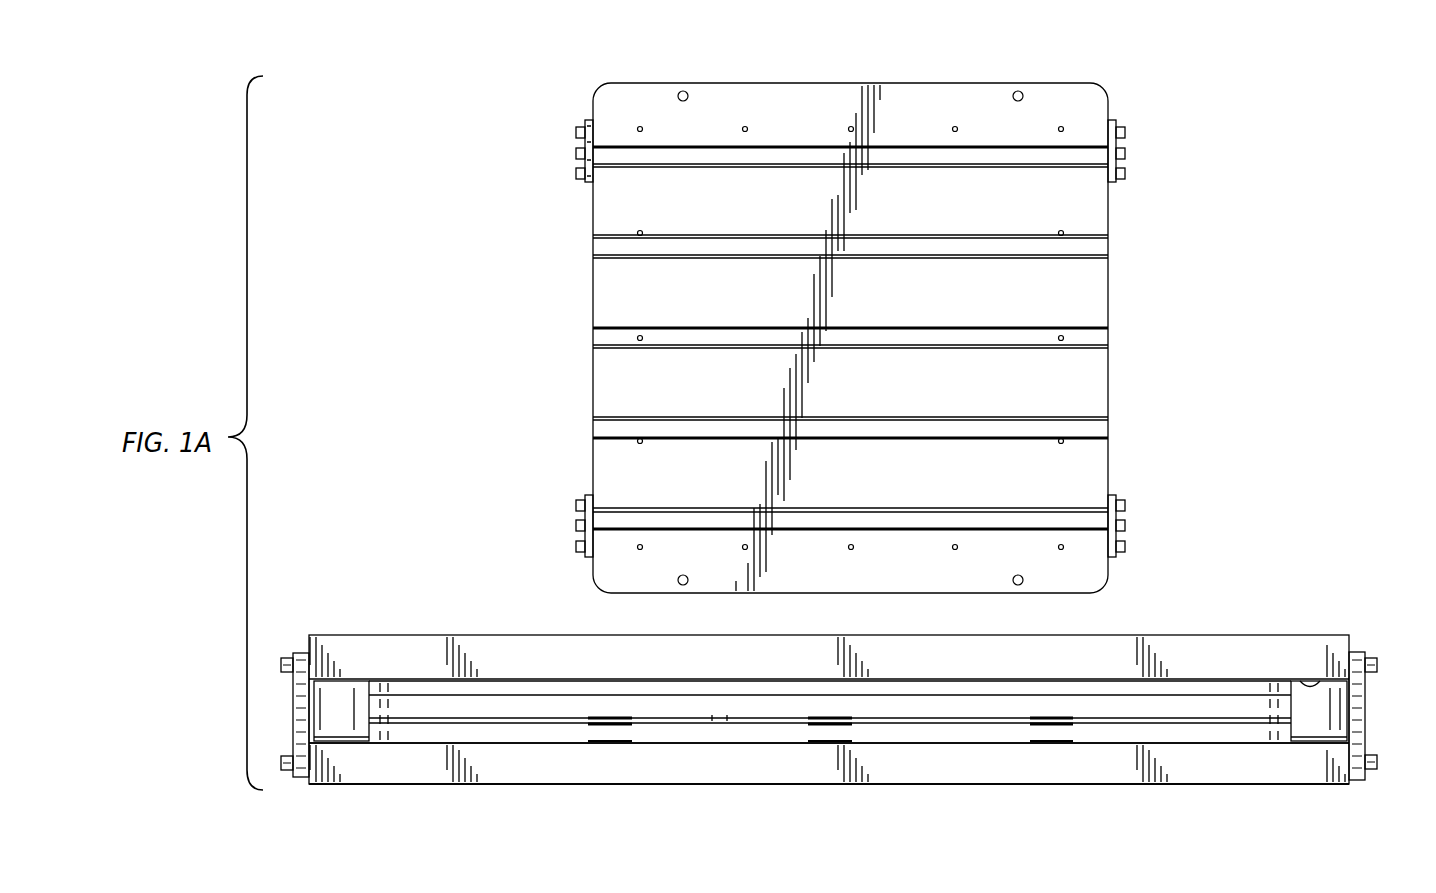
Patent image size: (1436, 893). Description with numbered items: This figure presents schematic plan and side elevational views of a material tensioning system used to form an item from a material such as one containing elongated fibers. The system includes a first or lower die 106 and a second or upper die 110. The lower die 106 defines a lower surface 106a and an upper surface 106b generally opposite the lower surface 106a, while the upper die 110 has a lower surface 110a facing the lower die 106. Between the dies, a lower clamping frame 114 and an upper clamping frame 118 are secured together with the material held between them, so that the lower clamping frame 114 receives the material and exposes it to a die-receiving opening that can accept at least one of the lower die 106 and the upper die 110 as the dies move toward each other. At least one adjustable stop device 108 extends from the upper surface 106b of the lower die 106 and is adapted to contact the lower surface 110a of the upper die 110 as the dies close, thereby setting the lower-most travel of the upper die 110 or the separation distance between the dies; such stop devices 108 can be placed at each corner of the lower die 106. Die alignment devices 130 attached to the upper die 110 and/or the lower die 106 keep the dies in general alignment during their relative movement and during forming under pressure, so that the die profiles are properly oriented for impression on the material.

The lower die 106 is at (890, 785).
The lower surface of lower die 106a is at (568, 785).
The upper surface of lower die 106b is at (972, 207).
The adjustable stop device 108 is at (1308, 687).
The upper die 110 is at (949, 97).
The lower surface of upper die 110a is at (1325, 697).
The lower clamping frame 114 is at (417, 738).
The upper clamping frame 118 is at (418, 703).
The die alignment device 130 is at (562, 144).